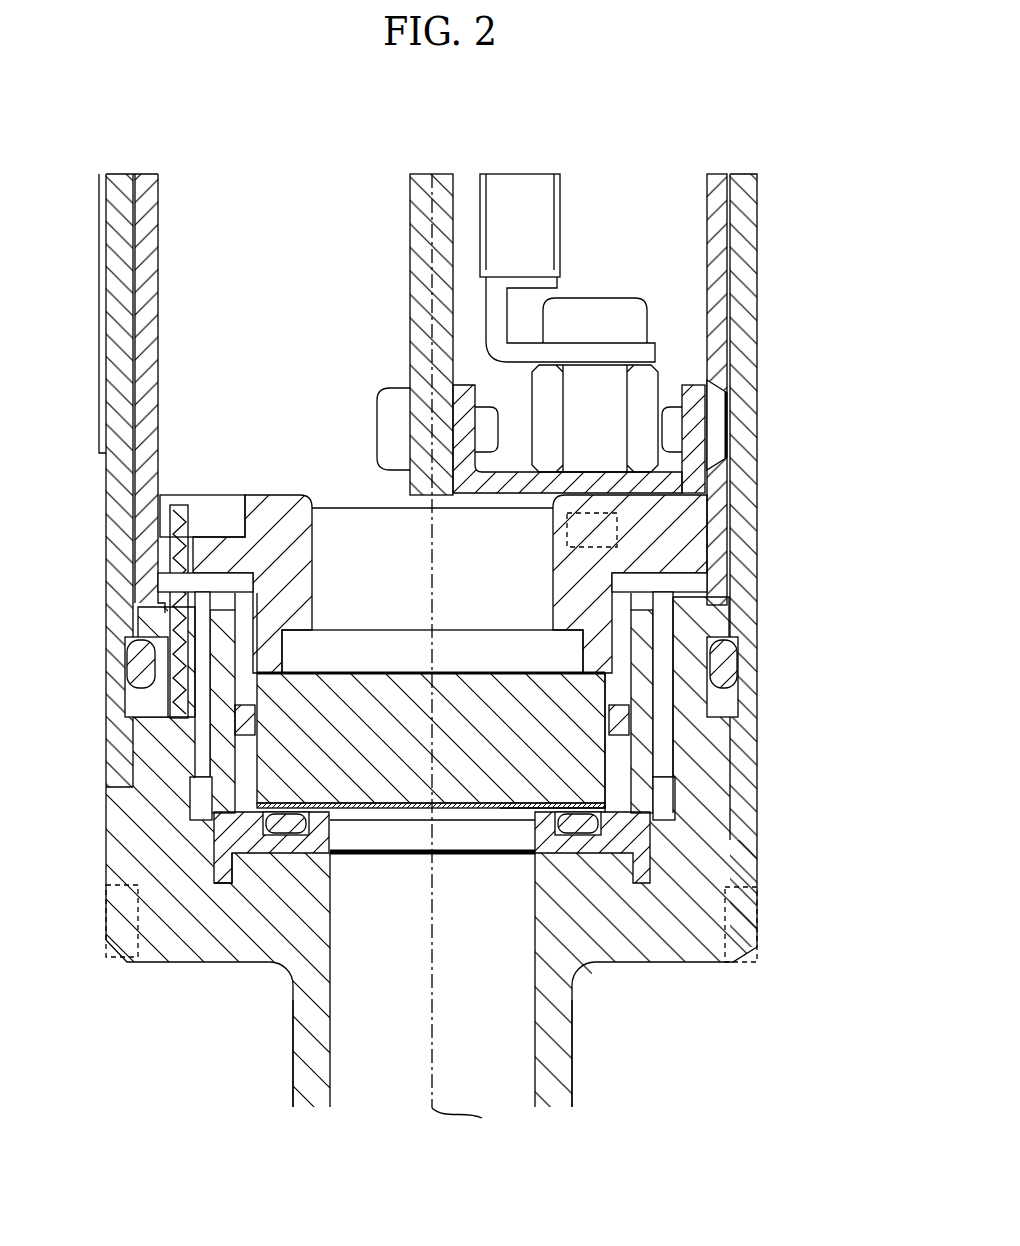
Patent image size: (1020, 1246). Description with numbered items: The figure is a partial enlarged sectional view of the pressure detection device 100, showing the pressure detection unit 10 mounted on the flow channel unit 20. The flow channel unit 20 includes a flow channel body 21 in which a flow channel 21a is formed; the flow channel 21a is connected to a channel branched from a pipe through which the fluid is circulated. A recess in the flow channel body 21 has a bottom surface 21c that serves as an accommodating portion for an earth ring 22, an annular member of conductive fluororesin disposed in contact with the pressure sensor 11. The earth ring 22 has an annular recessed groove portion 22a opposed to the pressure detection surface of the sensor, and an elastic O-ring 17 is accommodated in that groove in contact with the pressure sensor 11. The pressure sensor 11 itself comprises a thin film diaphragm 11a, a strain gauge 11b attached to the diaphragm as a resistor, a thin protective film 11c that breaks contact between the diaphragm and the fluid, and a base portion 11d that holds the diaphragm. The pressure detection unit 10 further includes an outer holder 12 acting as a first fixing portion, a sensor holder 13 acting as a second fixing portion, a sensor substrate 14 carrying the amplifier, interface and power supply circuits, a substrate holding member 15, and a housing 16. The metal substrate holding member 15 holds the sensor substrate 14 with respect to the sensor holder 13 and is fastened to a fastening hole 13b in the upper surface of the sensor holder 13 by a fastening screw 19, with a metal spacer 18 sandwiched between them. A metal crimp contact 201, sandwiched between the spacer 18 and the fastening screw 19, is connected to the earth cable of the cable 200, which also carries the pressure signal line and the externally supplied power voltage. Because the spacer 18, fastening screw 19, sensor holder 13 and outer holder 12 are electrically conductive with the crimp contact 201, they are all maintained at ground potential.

The pressure detection device 100 is at (705, 118).
The pressure detection unit 10 is at (233, 186).
The pressure sensor 11 is at (358, 670).
The diaphragm 11a is at (552, 803).
The strain gauge 11b is at (462, 803).
The protective film 11c is at (472, 856).
The base portion 11d is at (475, 673).
The outer holder 12 is at (675, 750).
The sensor holder 13 is at (712, 522).
The fastening hole 13b is at (567, 528).
The sensor substrate 14 is at (410, 338).
The substrate holding member 15 is at (682, 482).
The housing 16 is at (757, 244).
The O-ring 17 is at (289, 814).
The spacer 18 is at (658, 380).
The fastening screw 19 is at (597, 298).
The flow channel unit 20 is at (760, 836).
The flow channel body 21 is at (757, 918).
The flow channel 21a is at (537, 1048).
The bottom surface 21c is at (237, 854).
The earth ring 22 is at (214, 836).
The recessed groove portion 22a is at (279, 835).
The cable 200 is at (560, 187).
The crimp contact 201 is at (655, 347).